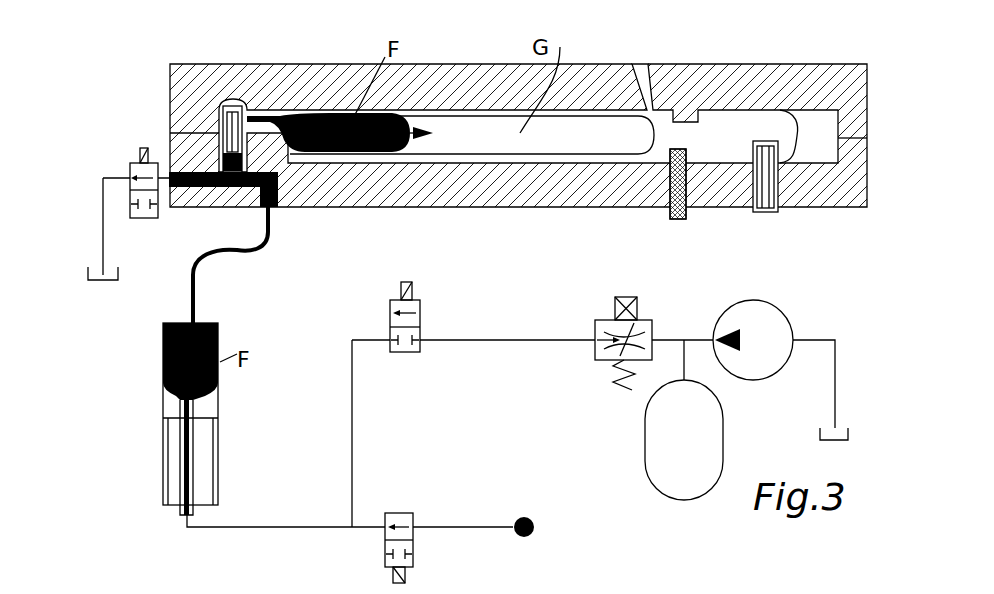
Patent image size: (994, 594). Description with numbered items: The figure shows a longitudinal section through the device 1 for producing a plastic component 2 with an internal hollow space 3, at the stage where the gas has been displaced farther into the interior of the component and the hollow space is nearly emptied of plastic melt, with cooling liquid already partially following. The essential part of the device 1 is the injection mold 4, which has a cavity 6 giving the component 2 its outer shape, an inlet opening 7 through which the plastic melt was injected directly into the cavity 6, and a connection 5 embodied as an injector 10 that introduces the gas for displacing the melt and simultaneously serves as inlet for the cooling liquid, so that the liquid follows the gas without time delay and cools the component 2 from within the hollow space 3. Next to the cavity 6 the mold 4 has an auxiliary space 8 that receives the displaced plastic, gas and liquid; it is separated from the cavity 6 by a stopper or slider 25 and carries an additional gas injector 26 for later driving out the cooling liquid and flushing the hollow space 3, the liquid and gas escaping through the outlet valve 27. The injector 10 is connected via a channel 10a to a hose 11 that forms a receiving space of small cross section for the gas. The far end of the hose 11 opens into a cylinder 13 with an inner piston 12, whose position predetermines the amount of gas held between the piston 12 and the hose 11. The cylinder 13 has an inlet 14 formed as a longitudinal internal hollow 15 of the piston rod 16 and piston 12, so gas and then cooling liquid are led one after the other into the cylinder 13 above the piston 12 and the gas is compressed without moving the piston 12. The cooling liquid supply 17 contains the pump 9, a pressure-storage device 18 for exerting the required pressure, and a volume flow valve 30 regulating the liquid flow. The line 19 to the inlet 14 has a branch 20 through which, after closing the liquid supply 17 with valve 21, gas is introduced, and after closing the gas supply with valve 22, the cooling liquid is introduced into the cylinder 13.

The device 1 is at (143, 327).
The plastic component 2 is at (492, 150).
The internal hollow space 3 is at (560, 135).
The injection mold 4 is at (363, 200).
The connection 5 is at (243, 118).
The cavity 6 is at (305, 165).
The inlet opening 7 is at (643, 85).
The auxiliary space 8 is at (813, 153).
The pump 9 is at (778, 313).
The injector 10 is at (212, 118).
The channel 10a is at (237, 193).
The hose 11 is at (233, 250).
The piston 12 is at (207, 408).
The cylinder 13 is at (218, 458).
The inlet 14 is at (187, 515).
The longitudinal internal hollow 15 is at (188, 472).
The piston rod 16 is at (180, 487).
The supply 17 is at (487, 340).
The pressure-storage device 18 is at (645, 437).
The line 19 is at (245, 530).
The branch 20 is at (347, 530).
The valve 21 is at (420, 322).
The valve 22 is at (413, 543).
The slider 25 is at (677, 220).
The additional gas injector 26 is at (760, 182).
The outlet valve 27 is at (142, 218).
The volume flow valve 30 is at (595, 358).